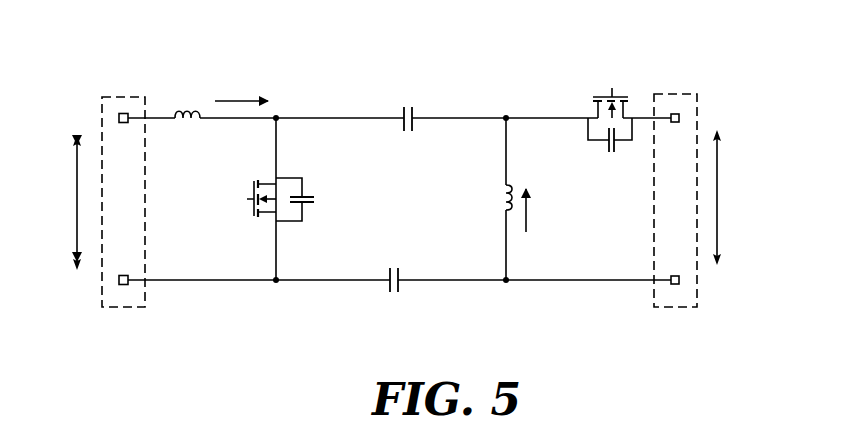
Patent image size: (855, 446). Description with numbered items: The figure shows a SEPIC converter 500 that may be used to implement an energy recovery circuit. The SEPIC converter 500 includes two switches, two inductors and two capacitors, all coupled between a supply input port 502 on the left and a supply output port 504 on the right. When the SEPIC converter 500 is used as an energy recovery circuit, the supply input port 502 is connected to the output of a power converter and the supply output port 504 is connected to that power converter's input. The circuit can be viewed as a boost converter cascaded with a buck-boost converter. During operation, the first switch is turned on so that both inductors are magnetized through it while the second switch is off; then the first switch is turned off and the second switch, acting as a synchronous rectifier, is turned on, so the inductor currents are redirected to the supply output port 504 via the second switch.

The SEPIC converter 500 is at (88, 39).
The supply input port 502 is at (102, 110).
The supply output port 504 is at (697, 101).